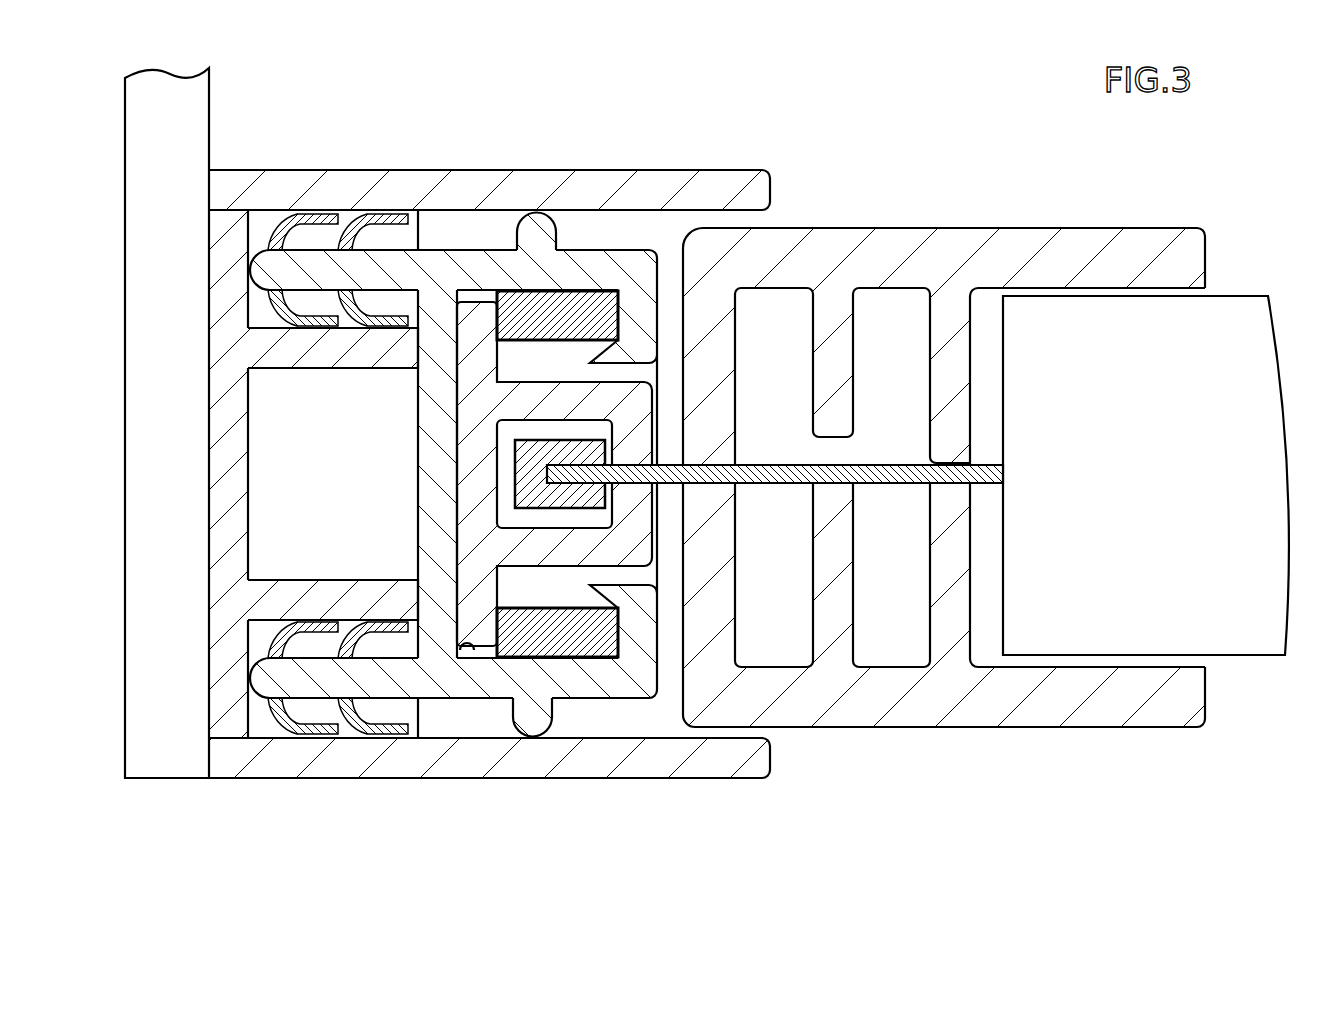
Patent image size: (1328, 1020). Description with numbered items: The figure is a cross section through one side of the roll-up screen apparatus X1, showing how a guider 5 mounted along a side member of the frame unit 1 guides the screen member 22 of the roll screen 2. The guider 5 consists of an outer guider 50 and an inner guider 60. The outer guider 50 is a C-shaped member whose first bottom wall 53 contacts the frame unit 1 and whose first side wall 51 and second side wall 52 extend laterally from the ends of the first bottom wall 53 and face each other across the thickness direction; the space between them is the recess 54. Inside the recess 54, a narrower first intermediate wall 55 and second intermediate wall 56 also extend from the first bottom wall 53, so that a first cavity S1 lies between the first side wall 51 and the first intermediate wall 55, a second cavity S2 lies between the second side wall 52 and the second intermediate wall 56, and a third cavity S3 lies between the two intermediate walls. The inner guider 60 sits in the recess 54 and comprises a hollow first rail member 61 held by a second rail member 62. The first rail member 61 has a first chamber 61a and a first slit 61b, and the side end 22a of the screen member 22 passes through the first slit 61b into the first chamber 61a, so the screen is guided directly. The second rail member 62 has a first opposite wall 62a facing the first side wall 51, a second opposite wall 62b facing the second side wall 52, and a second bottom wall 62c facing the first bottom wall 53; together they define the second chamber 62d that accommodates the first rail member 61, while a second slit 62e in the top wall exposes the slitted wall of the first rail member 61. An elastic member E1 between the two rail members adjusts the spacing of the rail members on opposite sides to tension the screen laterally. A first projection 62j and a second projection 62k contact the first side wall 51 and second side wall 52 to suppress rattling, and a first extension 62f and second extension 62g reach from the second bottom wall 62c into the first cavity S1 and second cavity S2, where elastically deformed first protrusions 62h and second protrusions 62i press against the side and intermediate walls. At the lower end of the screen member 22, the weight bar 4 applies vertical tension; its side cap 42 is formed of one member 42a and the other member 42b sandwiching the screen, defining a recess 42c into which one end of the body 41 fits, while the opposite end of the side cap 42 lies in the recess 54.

The frame unit 1 is at (142, 730).
The roll screen 2 is at (918, 472).
The weight bar 4 is at (986, 499).
The guider 5 is at (521, 480).
The screen member 22 is at (775, 298).
The side end 22a is at (557, 452).
The body 41 is at (1225, 625).
The side cap 42 is at (970, 559).
The one member 42a is at (850, 440).
The other member 42b is at (915, 705).
The recess 42c is at (1077, 640).
The outer guider 50 is at (503, 494).
The first side wall 51 is at (668, 183).
The second side wall 52 is at (648, 760).
The first bottom wall 53 is at (281, 543).
The recess 54 is at (578, 722).
The first intermediate wall 55 is at (300, 345).
The second intermediate wall 56 is at (330, 590).
The inner guider 60 is at (555, 480).
The first rail member 61 is at (630, 474).
The first chamber 61a is at (555, 530).
The first slit 61b is at (648, 472).
The second rail member 62 is at (526, 480).
The first opposite wall 62a is at (490, 265).
The second opposite wall 62b is at (515, 676).
The second bottom wall 62c is at (433, 505).
The second chamber 62d is at (478, 655).
The second slit 62e is at (625, 362).
The first extension 62f is at (390, 262).
The second extension 62g is at (378, 680).
The first protrusions 62h is at (362, 214).
The second protrusions 62i is at (302, 735).
The first projection 62j is at (541, 226).
The second projection 62k is at (540, 730).
The elastic member E1 is at (622, 298).
The first cavity S1 is at (268, 216).
The second cavity S2 is at (368, 728).
The third cavity S3 is at (285, 568).
The screen apparatus X1 is at (950, 106).